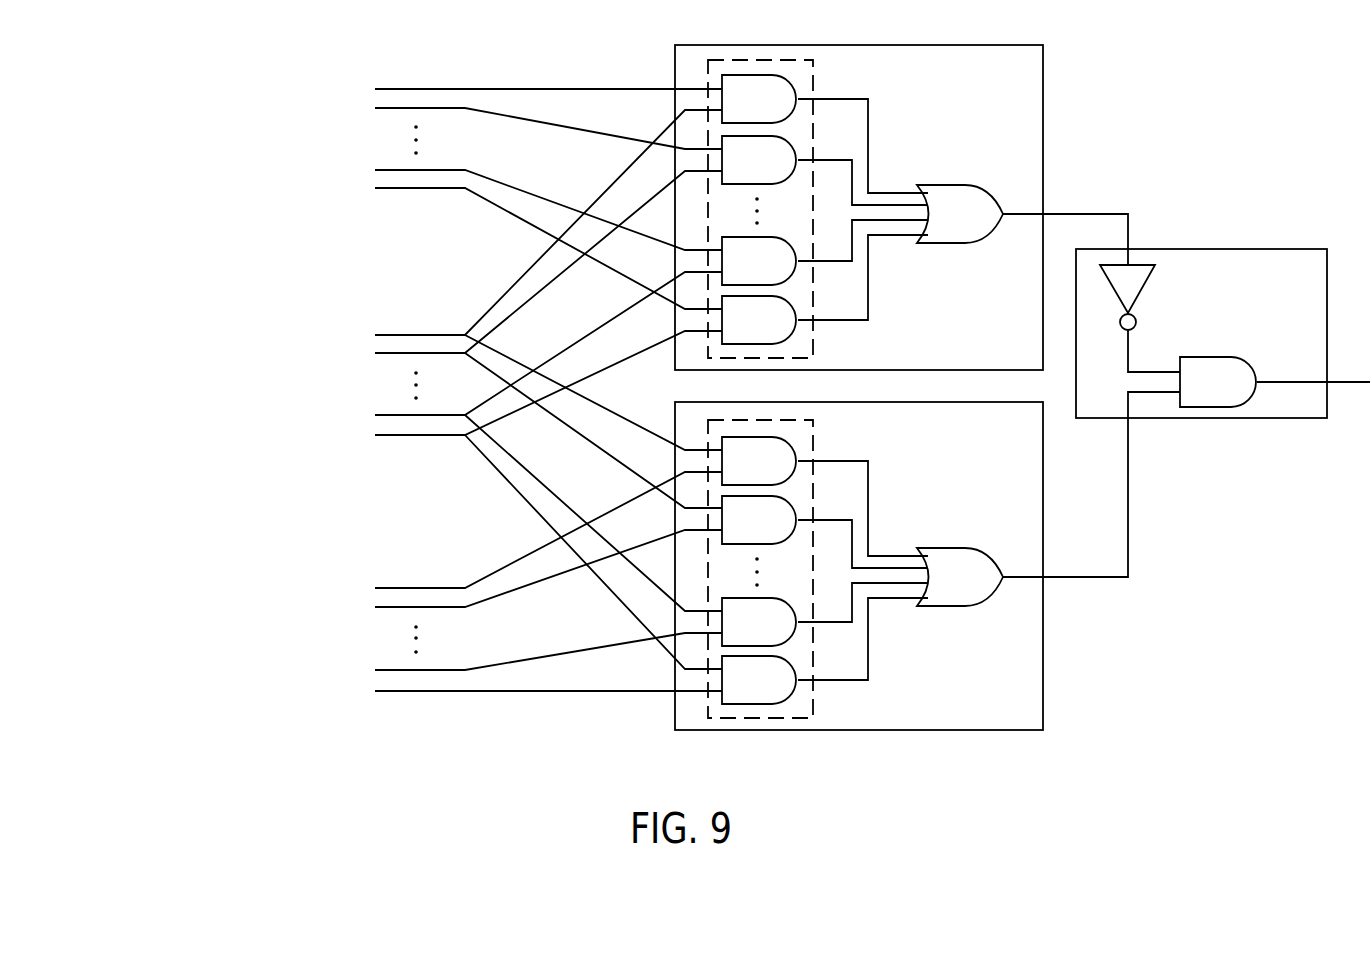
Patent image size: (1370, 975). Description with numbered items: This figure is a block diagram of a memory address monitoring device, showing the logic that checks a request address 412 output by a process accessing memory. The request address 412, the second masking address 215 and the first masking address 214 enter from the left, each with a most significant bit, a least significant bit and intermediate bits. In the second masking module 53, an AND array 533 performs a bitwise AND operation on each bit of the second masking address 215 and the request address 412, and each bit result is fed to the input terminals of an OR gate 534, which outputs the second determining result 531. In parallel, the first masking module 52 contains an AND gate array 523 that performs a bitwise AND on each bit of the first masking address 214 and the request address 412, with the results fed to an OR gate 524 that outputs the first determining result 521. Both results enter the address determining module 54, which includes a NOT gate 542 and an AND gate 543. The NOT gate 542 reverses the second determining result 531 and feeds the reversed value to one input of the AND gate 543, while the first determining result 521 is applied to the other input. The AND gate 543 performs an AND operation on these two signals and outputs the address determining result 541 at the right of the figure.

The second masking module 53 is at (1023, 45).
The AND array 533 is at (813, 76).
The OR gate 534 is at (950, 186).
The second determining result 531 is at (1019, 213).
The first masking module 52 is at (1040, 730).
The AND gate array 523 is at (813, 436).
The OR gate 524 is at (950, 548).
The first determining result 521 is at (1019, 575).
The address determining module 54 is at (1305, 249).
The NOT gate 542 is at (1152, 264).
The AND gate 543 is at (1216, 408).
The address determining result 541 is at (1282, 380).
The second masking address 215 is at (378, 180).
The request address 412 is at (422, 389).
The first masking address 214 is at (378, 598).